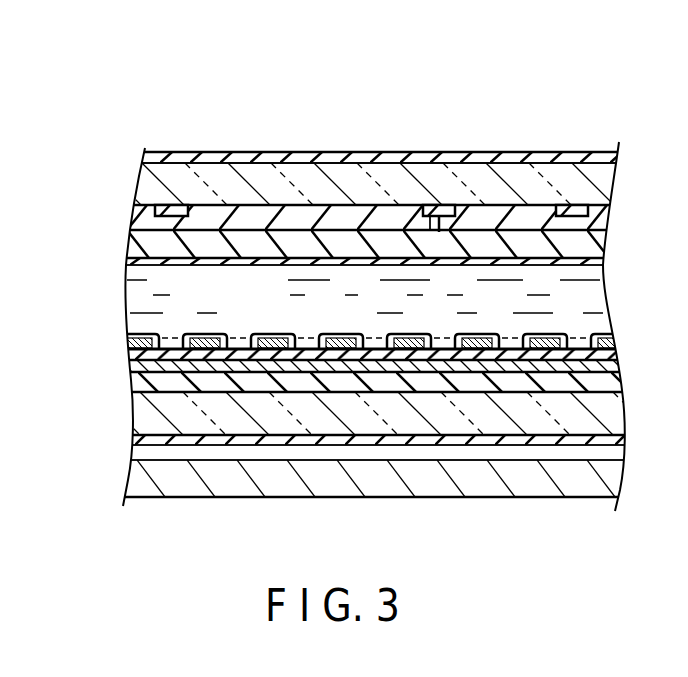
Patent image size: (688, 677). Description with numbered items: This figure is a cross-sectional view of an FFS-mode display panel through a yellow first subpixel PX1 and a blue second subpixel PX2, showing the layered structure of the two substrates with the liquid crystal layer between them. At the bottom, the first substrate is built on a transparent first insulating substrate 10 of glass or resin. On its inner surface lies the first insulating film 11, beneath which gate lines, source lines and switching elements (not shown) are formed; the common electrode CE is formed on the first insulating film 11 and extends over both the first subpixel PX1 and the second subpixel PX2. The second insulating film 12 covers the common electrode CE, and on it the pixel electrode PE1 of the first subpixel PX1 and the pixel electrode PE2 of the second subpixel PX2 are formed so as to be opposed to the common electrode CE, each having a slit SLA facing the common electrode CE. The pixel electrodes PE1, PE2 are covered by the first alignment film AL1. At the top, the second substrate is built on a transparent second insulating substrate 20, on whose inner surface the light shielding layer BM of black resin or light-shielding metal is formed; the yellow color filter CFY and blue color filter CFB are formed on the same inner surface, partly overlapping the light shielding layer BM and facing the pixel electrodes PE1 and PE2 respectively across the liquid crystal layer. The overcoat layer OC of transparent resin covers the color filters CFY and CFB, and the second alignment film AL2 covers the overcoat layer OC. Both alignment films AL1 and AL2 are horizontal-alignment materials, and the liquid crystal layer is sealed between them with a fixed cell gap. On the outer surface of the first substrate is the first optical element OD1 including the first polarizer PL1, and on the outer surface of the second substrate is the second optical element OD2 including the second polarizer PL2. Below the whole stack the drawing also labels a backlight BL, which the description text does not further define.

The second optical element OD2 is at (141, 155).
The second polarizer PL2 is at (326, 149).
The second insulating substrate 20 is at (141, 184).
The overcoat layer OC is at (136, 242).
The second alignment film AL2 is at (130, 262).
The first alignment film AL1 is at (128, 333).
The second insulating film 12 is at (129, 352).
The common electrode CE is at (131, 366).
The first insulating film 11 is at (133, 384).
The first insulating substrate 10 is at (134, 425).
The first optical element OD1 is at (131, 440).
The first polarizer PL1 is at (321, 461).
The backlight unit BL is at (129, 478).
The pixel electrode PE1 is at (206, 349).
The pixel electrode PE2 is at (486, 349).
The light shielding layer BM is at (168, 206).
The yellow color filter CFY is at (254, 218).
The blue color filter CFB is at (477, 218).
The first subpixel PX1 is at (317, 151).
The second subpixel PX2 is at (525, 151).
The slit SLA is at (378, 337).